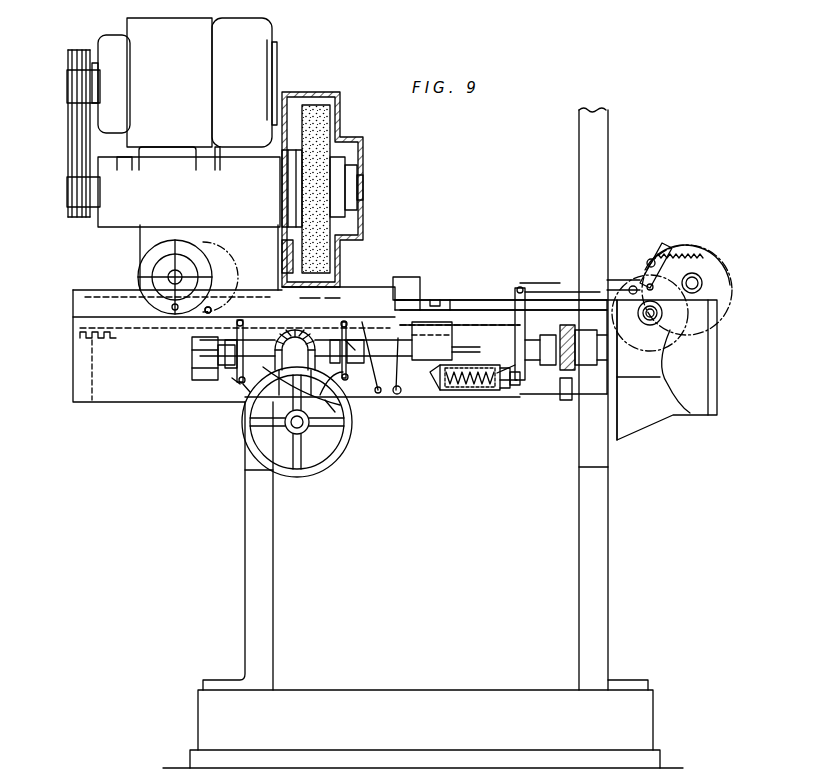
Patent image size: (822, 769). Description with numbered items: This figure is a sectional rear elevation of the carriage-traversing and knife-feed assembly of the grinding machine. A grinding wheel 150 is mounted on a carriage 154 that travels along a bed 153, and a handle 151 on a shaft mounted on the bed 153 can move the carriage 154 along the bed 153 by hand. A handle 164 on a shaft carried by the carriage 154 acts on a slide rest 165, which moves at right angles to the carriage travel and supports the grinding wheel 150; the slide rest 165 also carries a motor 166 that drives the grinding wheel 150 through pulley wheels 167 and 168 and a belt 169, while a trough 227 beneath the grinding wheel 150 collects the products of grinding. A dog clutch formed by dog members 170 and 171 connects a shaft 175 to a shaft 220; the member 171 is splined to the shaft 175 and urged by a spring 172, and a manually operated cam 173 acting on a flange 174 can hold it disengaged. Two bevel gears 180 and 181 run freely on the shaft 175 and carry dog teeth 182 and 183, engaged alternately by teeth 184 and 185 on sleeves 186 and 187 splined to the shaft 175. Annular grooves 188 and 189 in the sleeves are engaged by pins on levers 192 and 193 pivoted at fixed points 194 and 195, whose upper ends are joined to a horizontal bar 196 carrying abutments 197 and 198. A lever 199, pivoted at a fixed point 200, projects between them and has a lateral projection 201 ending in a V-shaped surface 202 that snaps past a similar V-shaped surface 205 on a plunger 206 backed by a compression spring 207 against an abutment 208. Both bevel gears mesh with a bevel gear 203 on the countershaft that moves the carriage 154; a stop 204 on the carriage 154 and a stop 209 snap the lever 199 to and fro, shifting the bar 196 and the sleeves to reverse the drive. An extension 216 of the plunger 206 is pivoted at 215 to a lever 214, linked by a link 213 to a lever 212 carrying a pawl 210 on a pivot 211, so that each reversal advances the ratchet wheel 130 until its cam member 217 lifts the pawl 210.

The feed ratchet wheel 130 is at (713, 247).
The grinding wheel 150 is at (305, 112).
The handle 151 is at (345, 458).
The bed 153 is at (484, 300).
The carriage 154 is at (120, 300).
The handle 164 is at (178, 255).
The slide rest 165 is at (150, 240).
The motor 166 is at (251, 58).
The pulley wheel 167 is at (67, 57).
The pulley wheel 168 is at (68, 178).
The belt 169 is at (78, 137).
The dog member 170 is at (566, 330).
The dog member 171 is at (563, 328).
The spring 172 is at (527, 347).
The cam 173 is at (563, 382).
The flange 174 is at (552, 322).
The shaft 175 is at (482, 347).
The bevel gear 180 is at (280, 318).
The bevel gear 181 is at (300, 332).
The dog teeth 182 is at (330, 335).
The dog teeth 183 is at (268, 330).
The teeth 184 is at (350, 372).
The teeth 185 is at (232, 381).
The sleeve 186 is at (356, 376).
The sleeve 187 is at (233, 363).
The annular groove 188 is at (366, 350).
The annular groove 189 is at (217, 352).
The lever 192 is at (345, 375).
The lever 193 is at (240, 374).
The fixed point 194 is at (245, 388).
The fixed point 195 is at (330, 405).
The horizontal bar 196 is at (330, 298).
The abutment 197 is at (350, 345).
The abutment 198 is at (400, 300).
The lever 199 is at (412, 382).
The fixed point 200 is at (380, 385).
The lateral projection 201 is at (432, 341).
The V-shaped surface 202 is at (452, 392).
The bevel gear 203 is at (310, 298).
The stop 204 is at (203, 311).
The V-shaped surface 205 is at (478, 390).
The plunger 206 is at (512, 388).
The compression spring 207 is at (462, 367).
The abutment 208 is at (503, 392).
The stop 209 is at (445, 300).
The pawl 210 is at (638, 275).
The pivot 211 is at (648, 247).
The lever 212 is at (694, 274).
The link 213 is at (537, 280).
The lever 214 is at (522, 285).
The pivot 215 is at (520, 375).
The extension 216 is at (512, 382).
The cam member 217 is at (688, 337).
The shaft 220 is at (617, 348).
The trough 227 is at (332, 253).